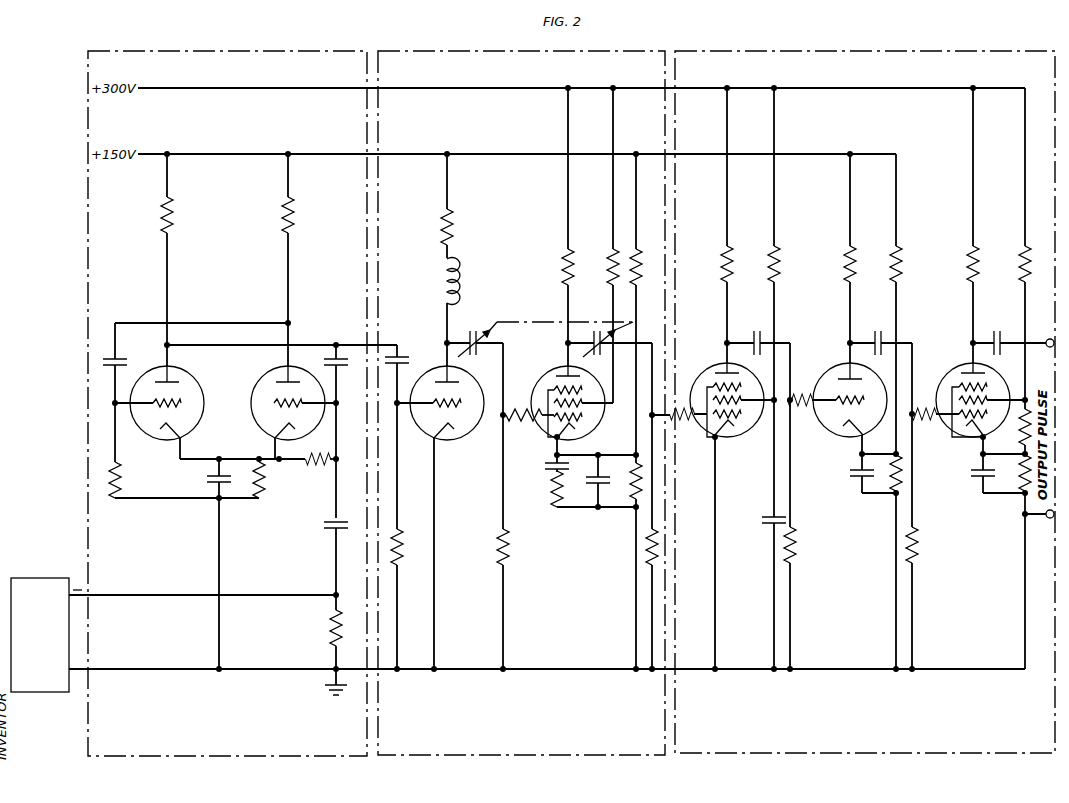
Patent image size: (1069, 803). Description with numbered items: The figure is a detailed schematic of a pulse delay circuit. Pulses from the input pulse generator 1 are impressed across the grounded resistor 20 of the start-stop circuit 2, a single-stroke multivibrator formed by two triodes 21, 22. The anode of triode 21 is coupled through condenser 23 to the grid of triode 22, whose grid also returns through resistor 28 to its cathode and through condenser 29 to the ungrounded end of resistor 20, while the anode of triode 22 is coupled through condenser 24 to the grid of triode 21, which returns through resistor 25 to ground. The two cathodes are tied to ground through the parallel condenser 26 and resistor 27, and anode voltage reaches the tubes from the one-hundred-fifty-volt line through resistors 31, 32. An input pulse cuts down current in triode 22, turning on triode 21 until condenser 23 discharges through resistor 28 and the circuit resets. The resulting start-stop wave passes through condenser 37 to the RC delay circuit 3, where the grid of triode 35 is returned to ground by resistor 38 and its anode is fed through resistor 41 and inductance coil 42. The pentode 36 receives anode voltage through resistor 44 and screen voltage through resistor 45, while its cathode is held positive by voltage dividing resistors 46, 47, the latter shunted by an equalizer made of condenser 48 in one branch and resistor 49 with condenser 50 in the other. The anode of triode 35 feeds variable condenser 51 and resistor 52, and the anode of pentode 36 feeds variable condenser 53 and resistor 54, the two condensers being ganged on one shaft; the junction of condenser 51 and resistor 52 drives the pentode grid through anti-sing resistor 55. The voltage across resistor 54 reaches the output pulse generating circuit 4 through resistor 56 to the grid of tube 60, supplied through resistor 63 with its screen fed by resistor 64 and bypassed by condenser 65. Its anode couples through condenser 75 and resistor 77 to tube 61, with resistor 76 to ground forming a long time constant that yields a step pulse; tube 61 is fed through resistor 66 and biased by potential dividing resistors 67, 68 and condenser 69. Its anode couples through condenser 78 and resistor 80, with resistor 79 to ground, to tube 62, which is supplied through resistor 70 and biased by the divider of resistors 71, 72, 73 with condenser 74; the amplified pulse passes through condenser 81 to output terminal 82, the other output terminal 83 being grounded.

The input pulse generator 1 is at (46, 693).
The start-stop circuit 2 is at (253, 57).
The RC delay circuit 3 is at (611, 57).
The output pulse generating circuit 4 is at (899, 57).
The resistor 20 is at (330, 628).
The triode 21 is at (195, 383).
The triode 22 is at (256, 383).
The condenser 23 is at (342, 364).
The condenser 24 is at (130, 366).
The resistor 25 is at (122, 479).
The condenser 26 is at (207, 479).
The resistor 27 is at (264, 479).
The resistor 28 is at (315, 466).
The condenser 29 is at (325, 527).
The resistor 31 is at (161, 216).
The resistor 32 is at (293, 214).
The triode 35 is at (473, 431).
The pentode 36 is at (604, 430).
The condenser 37 is at (417, 348).
The resistor 38 is at (402, 544).
The resistor 41 is at (441, 227).
The inductance coil 42 is at (440, 280).
The resistor 44 is at (562, 267).
The resistor 45 is at (607, 270).
The voltage dividing resistor 46 is at (642, 271).
The voltage dividing resistor 47 is at (630, 481).
The condenser 48 is at (605, 482).
The resistor 49 is at (551, 489).
The condenser 50 is at (545, 466).
The variable condenser 51 is at (483, 331).
The resistor 52 is at (497, 547).
The variable condenser 53 is at (600, 331).
The resistor 54 is at (659, 548).
The anti-sing resistor 55 is at (524, 405).
The resistor 56 is at (680, 405).
The tube 60 is at (694, 424).
The tube 61 is at (818, 430).
The tube 62 is at (941, 428).
The resistor 63 is at (721, 267).
The resistor 64 is at (780, 268).
The condenser 65 is at (762, 523).
The resistor 66 is at (844, 267).
The potential dividing resistor 67 is at (902, 268).
The potential dividing resistor 68 is at (904, 472).
The condenser 69 is at (852, 478).
The resistor 70 is at (966, 267).
The potential dividing resistor 71 is at (1019, 267).
The potential dividing resistor 72 is at (1019, 430).
The potential dividing resistor 73 is at (1019, 468).
The condenser 74 is at (971, 478).
The condenser 75 is at (760, 331).
The resistor 76 is at (797, 545).
The resistor 77 is at (800, 396).
The condenser 78 is at (881, 331).
The resistor 79 is at (918, 545).
The resistor 80 is at (924, 405).
The condenser 81 is at (1000, 331).
The output terminal 82 is at (1050, 339).
The output terminal 83 is at (1050, 518).